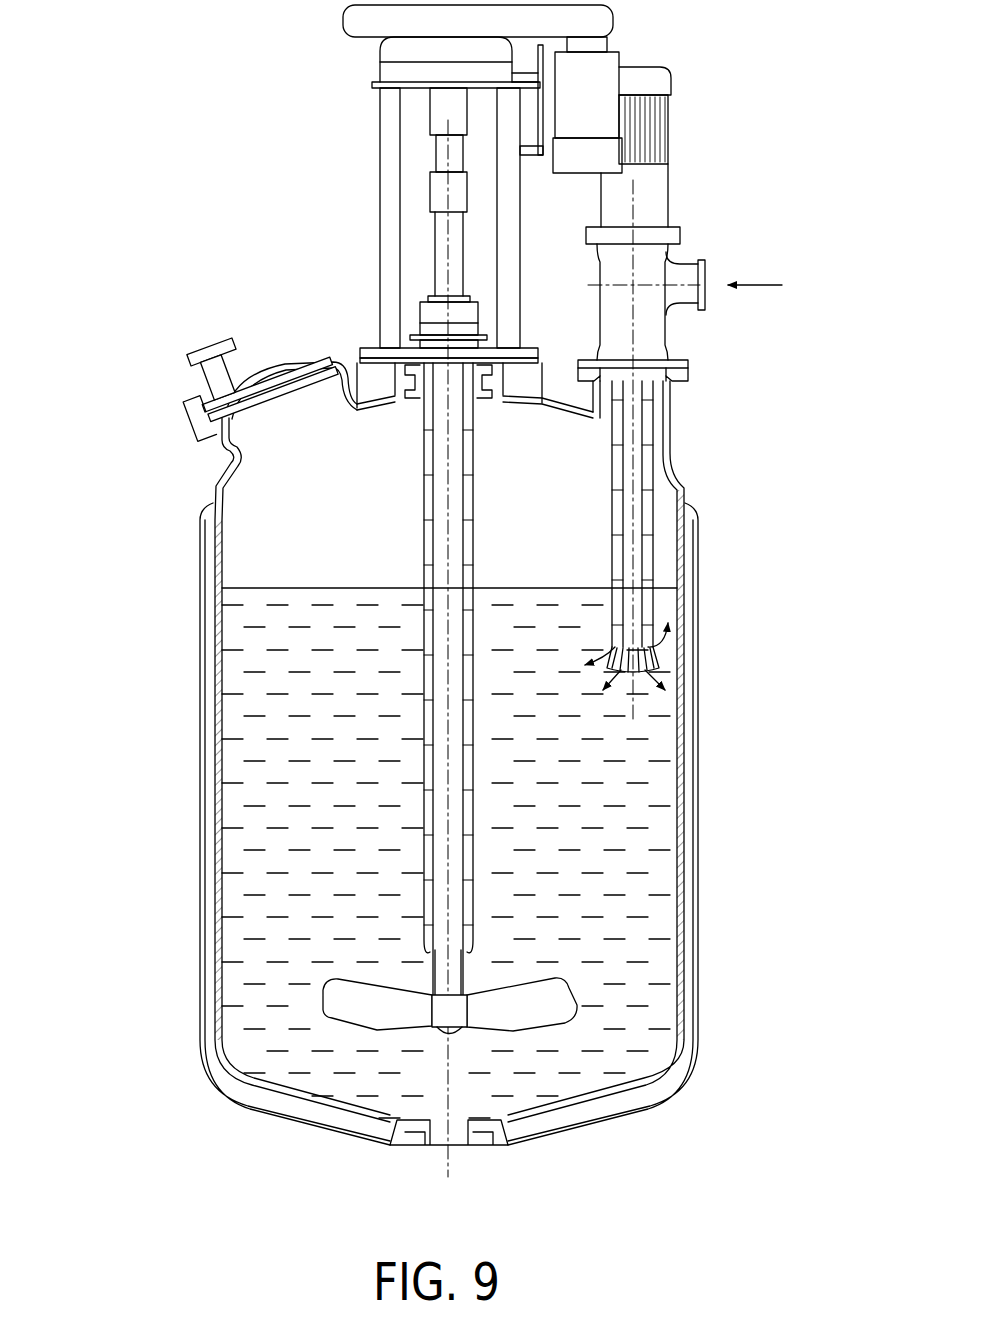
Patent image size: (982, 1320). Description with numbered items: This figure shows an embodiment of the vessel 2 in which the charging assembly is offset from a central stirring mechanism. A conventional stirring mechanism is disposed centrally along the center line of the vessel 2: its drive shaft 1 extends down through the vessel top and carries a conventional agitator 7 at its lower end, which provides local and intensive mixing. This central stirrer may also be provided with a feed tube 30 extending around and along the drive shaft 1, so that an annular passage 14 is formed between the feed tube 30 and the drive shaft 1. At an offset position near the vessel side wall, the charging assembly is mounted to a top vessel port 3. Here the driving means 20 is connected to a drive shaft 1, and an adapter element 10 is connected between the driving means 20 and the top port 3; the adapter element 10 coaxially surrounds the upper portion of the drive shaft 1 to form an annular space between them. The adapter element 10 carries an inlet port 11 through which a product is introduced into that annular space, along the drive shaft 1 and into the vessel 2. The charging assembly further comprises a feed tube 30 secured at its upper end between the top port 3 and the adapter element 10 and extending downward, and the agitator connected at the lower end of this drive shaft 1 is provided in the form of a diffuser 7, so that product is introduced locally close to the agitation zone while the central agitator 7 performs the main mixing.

The drive shaft 1 is at (440, 498).
The vessel 2 is at (698, 930).
The top port 3 is at (687, 372).
The agitator (diffuser) 7 is at (647, 658).
The adapter element 10 is at (645, 317).
The inlet port 11 is at (703, 270).
The annular passage 14 is at (432, 806).
The driving means 20 is at (647, 82).
The feed tube 30 is at (422, 752).